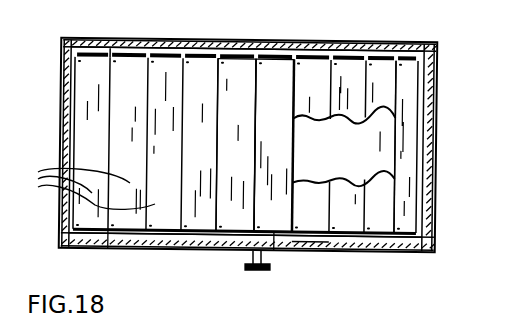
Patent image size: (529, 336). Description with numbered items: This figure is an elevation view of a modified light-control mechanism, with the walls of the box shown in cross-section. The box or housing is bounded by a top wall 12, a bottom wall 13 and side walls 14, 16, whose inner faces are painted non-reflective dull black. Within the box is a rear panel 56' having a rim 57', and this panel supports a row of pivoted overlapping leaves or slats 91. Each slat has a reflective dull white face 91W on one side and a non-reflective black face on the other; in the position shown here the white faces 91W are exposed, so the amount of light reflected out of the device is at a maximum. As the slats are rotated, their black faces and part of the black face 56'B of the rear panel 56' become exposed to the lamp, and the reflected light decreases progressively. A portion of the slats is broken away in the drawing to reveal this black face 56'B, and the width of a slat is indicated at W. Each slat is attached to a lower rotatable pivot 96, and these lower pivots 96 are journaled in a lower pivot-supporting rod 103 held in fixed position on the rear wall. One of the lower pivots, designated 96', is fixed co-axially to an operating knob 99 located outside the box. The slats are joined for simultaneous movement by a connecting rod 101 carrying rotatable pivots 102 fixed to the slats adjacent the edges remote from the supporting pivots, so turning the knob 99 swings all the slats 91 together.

The top wall 12 is at (302, 43).
The rotatable pivots 102 is at (78, 39).
The rim 57' is at (272, 148).
The connecting rod 101 is at (107, 50).
The side wall 14 is at (60, 123).
The side wall 16 is at (433, 177).
The bottom wall 13 is at (383, 254).
The lower pivot-supporting rod 103 is at (305, 254).
The reflective dull white face 91W is at (83, 190).
The slats 91 is at (242, 216).
The panel width W is at (274, 217).
The black face of rear panel 56'B is at (344, 145).
The rear panel 56' is at (443, 147).
The operating knob 99 is at (240, 256).
The lower rotatable pivots 96 is at (129, 258).
The knob pivot 96' is at (278, 260).